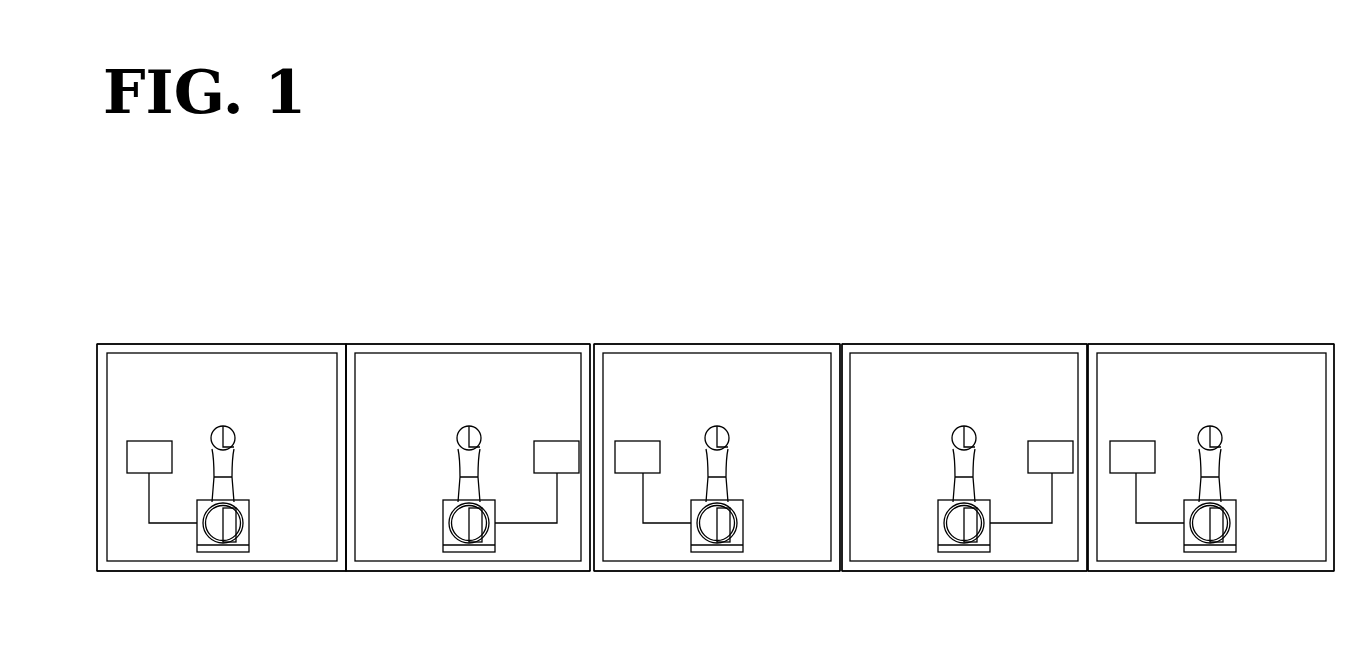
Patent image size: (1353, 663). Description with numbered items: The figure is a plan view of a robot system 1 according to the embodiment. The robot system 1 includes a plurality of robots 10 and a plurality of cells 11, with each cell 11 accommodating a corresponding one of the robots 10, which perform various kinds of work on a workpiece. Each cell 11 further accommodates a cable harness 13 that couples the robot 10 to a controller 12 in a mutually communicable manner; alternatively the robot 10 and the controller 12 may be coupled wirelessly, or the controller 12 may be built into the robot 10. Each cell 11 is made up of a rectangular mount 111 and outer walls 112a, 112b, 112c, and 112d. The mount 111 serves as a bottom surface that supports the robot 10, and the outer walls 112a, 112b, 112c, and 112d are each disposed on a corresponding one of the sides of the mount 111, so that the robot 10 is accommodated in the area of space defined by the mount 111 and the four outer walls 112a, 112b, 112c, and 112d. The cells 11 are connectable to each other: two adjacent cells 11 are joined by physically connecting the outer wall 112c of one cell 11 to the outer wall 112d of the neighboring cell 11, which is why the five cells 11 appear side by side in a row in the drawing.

The robot system 1 is at (410, 208).
The robot 10 is at (226, 434).
The cell 11 is at (314, 334).
The mount 111 is at (307, 550).
The outer wall 112a is at (222, 345).
The outer wall 112b is at (163, 565).
The outer wall 112c is at (345, 479).
The outer wall 112d is at (100, 378).
The controller 12 is at (155, 455).
The cable harness 13 is at (178, 522).